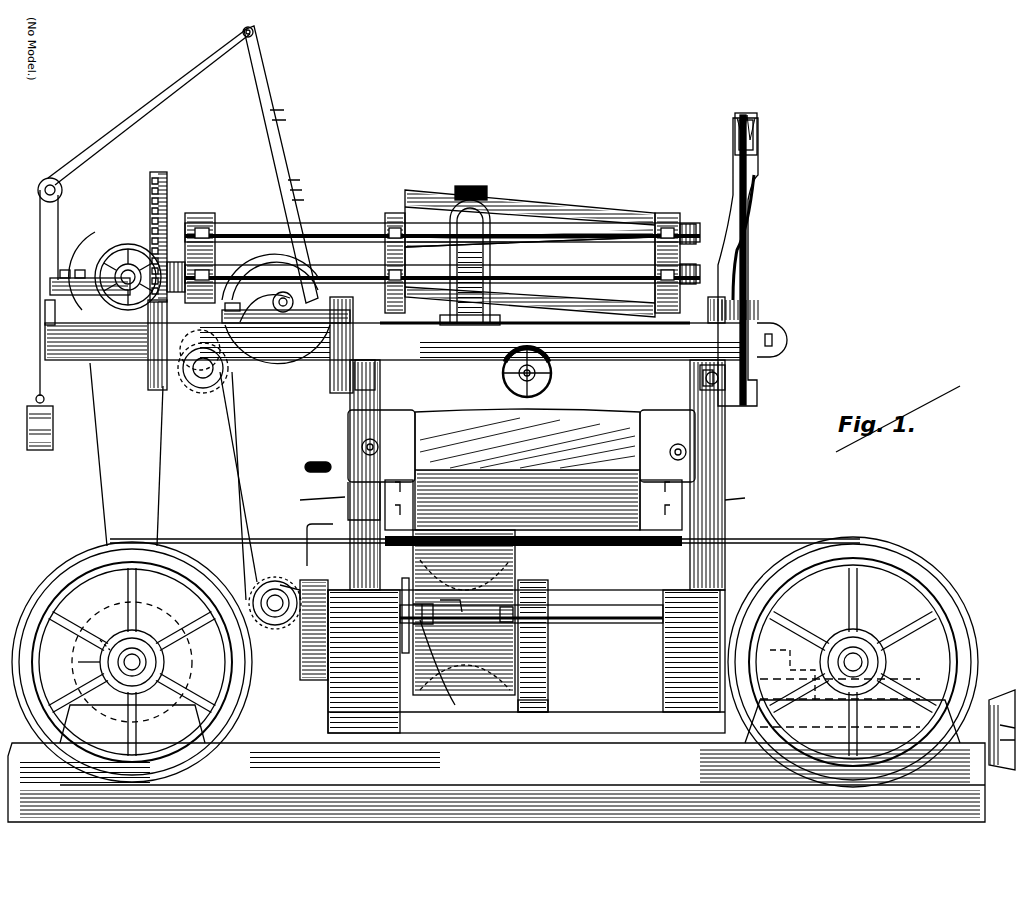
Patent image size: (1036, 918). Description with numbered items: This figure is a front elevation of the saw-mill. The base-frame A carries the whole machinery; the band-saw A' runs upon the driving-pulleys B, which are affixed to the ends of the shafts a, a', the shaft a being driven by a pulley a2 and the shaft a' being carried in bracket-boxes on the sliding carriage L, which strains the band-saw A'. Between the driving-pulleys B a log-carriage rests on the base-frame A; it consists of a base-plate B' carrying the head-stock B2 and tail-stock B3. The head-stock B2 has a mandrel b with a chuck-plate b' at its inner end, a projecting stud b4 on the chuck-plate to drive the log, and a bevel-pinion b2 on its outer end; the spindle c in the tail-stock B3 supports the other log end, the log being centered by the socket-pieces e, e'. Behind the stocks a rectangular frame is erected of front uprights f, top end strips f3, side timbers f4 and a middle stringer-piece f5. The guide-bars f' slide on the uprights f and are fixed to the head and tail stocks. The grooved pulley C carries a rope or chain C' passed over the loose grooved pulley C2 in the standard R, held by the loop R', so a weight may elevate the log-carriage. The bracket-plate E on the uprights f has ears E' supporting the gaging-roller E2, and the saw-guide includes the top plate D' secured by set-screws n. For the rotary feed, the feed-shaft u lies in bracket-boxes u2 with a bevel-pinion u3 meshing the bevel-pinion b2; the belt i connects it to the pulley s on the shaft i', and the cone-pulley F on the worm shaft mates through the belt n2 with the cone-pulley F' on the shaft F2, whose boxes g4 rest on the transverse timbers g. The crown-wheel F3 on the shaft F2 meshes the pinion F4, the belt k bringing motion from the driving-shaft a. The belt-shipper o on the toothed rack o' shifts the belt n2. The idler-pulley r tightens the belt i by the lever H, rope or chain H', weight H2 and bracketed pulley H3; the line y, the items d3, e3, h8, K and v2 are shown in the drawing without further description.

The base-frame A is at (496, 782).
The band-saw A' is at (485, 652).
The driving-pulleys B is at (501, 662).
The base-plate B' is at (526, 661).
The head-stock B2 is at (364, 661).
The tail-stock B3 is at (680, 651).
The driving-shaft a is at (432, 681).
The shaft a' is at (543, 688).
The pulley a2 is at (79, 662).
The mandrel b is at (455, 612).
The chuck-plate b' is at (405, 623).
The bevel-pinion b2 is at (652, 548).
The projecting stud b4 is at (444, 674).
The spindle c is at (535, 606).
The socket-piece e is at (423, 602).
The socket-piece e' is at (501, 604).
The clutch pin e3 is at (450, 604).
The feed-shaft u is at (270, 628).
The bracket-boxes u2 is at (263, 585).
The bevel-pinion u3 is at (282, 585).
The section line y y is at (148, 640).
The sliding carriage L is at (790, 672).
The top plate D' is at (533, 506).
The bracket-plate E is at (521, 463).
The ears E' is at (527, 478).
The gaging-roller E2 is at (528, 476).
The dial d3 is at (522, 384).
The front uprights f is at (527, 443).
The guide-bars f' is at (521, 529).
The top end strips f3 is at (376, 375).
The side timbers f4 is at (395, 341).
The middle stringer-piece f5 is at (135, 352).
The cone-pulley F is at (530, 214).
The cone-pulley F' is at (530, 277).
The shaft F2 is at (393, 212).
The crown-wheel F3 is at (168, 186).
The pinion F4 is at (100, 318).
The transverse timbers g is at (708, 305).
The boxes g4 is at (200, 260).
The belt-shipper o is at (484, 188).
The toothed rack o' is at (442, 243).
The set-screws n is at (140, 259).
The belt n2 is at (478, 262).
The standard R is at (695, 242).
The loop R' is at (741, 377).
The grooved pulley C is at (743, 260).
The rope or chain C' is at (756, 237).
The loose grooved pulley C2 is at (758, 116).
The lever H is at (280, 164).
The rope or chain H' is at (131, 212).
The weight H2 is at (27, 424).
The bracketed pulley H3 is at (62, 188).
The arm h8 is at (50, 288).
The bracket K is at (90, 255).
The pulley s is at (286, 304).
The belt i is at (238, 486).
The shaft i' is at (265, 320).
The belt k is at (161, 455).
The idler-pulley r is at (204, 389).
The knob v2 is at (317, 459).